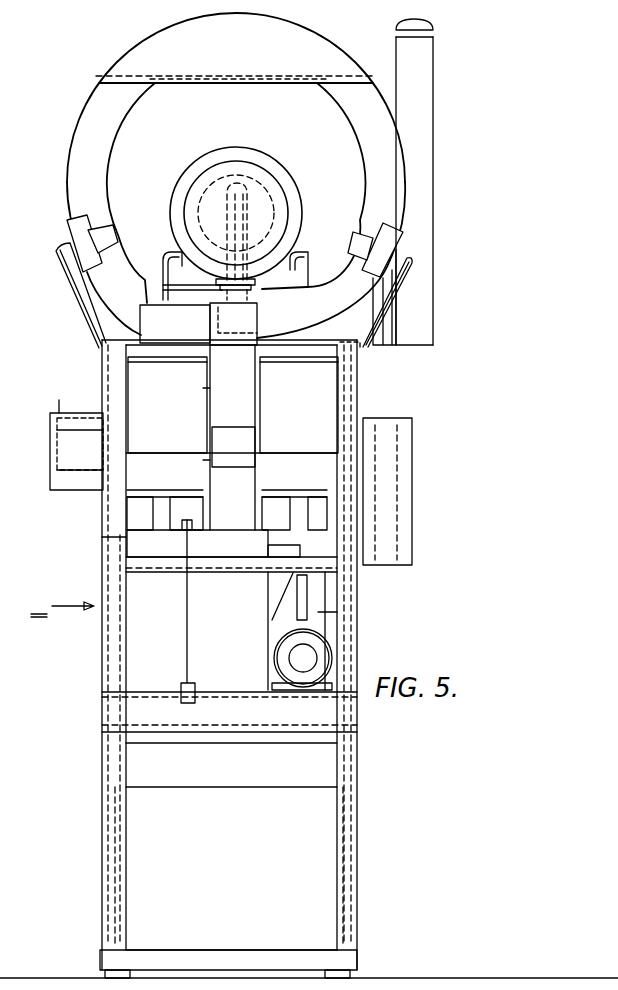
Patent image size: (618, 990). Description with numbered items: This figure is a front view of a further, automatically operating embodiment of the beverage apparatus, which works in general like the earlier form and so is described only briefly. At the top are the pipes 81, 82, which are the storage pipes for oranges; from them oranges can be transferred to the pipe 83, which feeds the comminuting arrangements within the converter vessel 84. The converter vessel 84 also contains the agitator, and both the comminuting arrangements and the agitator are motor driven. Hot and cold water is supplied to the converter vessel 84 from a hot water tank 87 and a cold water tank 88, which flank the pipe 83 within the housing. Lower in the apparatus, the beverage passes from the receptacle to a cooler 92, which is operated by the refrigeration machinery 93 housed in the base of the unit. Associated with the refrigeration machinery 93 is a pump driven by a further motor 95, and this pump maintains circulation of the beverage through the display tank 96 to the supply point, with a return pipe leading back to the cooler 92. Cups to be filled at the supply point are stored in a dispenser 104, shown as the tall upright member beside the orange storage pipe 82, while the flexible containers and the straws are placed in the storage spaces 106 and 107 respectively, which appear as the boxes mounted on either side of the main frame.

The storage pipe 81 is at (68, 153).
The storage pipe 82 is at (397, 155).
The pipe 83 is at (246, 383).
The converter vessel 84 is at (283, 600).
The hot water tank 87 is at (140, 390).
The cold water tank 88 is at (329, 387).
The cooler 92 is at (138, 668).
The refrigeration machinery 93 is at (330, 871).
The further motor 95 is at (283, 657).
The display tank 96 is at (197, 165).
The dispenser 104 is at (422, 303).
The storage space 106 is at (404, 540).
The storage space 107 is at (72, 449).